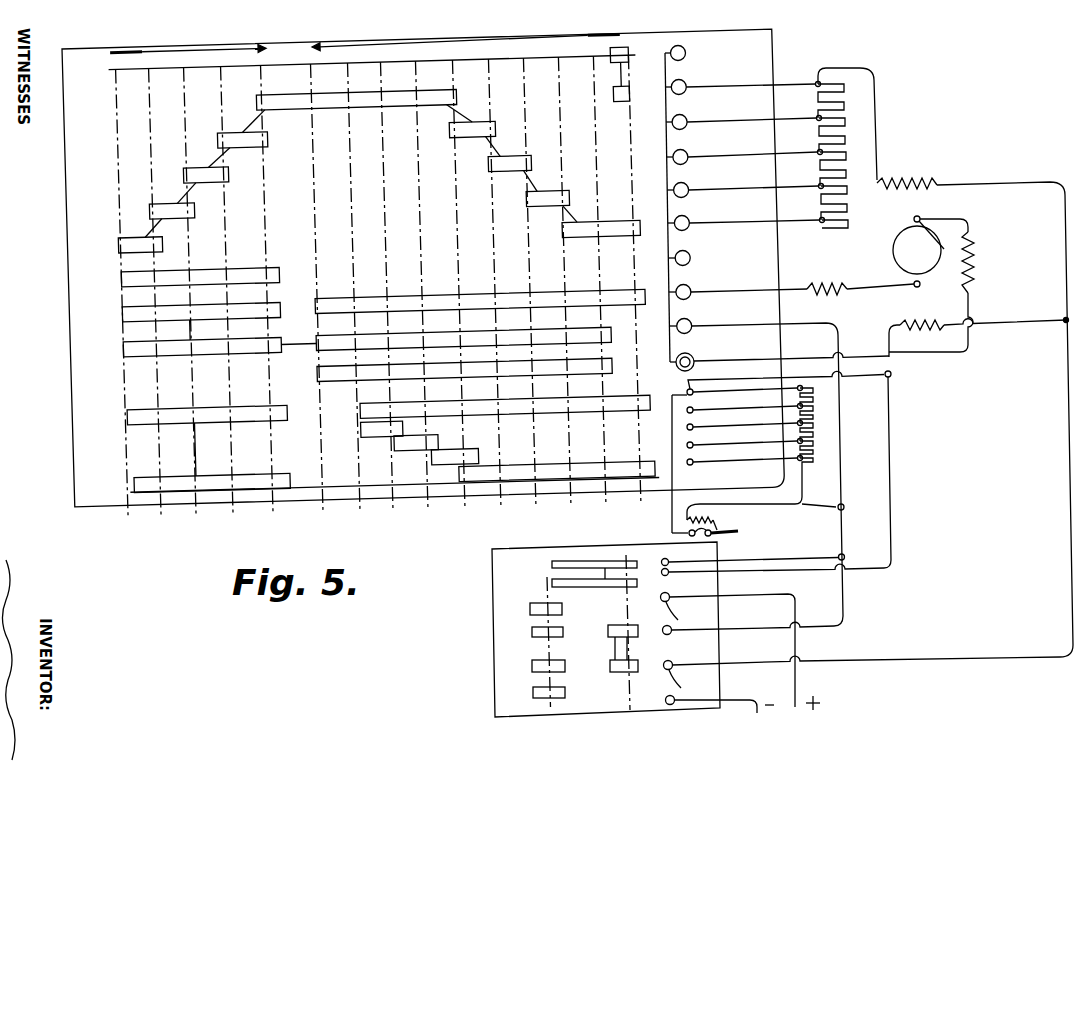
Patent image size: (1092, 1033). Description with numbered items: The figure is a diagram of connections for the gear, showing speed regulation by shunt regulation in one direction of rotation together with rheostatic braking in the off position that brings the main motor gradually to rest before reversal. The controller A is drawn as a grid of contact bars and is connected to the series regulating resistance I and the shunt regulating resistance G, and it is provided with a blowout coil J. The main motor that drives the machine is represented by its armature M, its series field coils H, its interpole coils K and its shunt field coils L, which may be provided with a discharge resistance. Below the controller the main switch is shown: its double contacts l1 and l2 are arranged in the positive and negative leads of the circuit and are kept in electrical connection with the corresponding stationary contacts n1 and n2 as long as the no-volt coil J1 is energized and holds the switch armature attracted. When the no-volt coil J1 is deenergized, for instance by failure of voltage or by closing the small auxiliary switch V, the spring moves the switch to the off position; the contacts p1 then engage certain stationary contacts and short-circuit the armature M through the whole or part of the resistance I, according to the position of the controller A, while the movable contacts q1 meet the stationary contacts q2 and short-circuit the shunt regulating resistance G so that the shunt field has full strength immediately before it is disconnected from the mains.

The controller A is at (423, 273).
The series regulating resistance I is at (843, 140).
The series field coils H is at (907, 171).
The blowout coil J is at (826, 278).
The armature M is at (918, 251).
The interpole coils K is at (944, 285).
The shunt field coils L is at (910, 324).
The shunt regulating resistance G is at (812, 440).
The auxiliary switch V is at (688, 533).
The no-volt coil J1 is at (718, 516).
The movable contacts q1 is at (552, 565).
The stationary contacts q2 is at (655, 573).
The double contacts l1 is at (530, 609).
The double contacts l2 is at (532, 666).
The contacts p1 is at (636, 640).
The stationary contacts n1 is at (728, 650).
The stationary contacts n2 is at (711, 687).